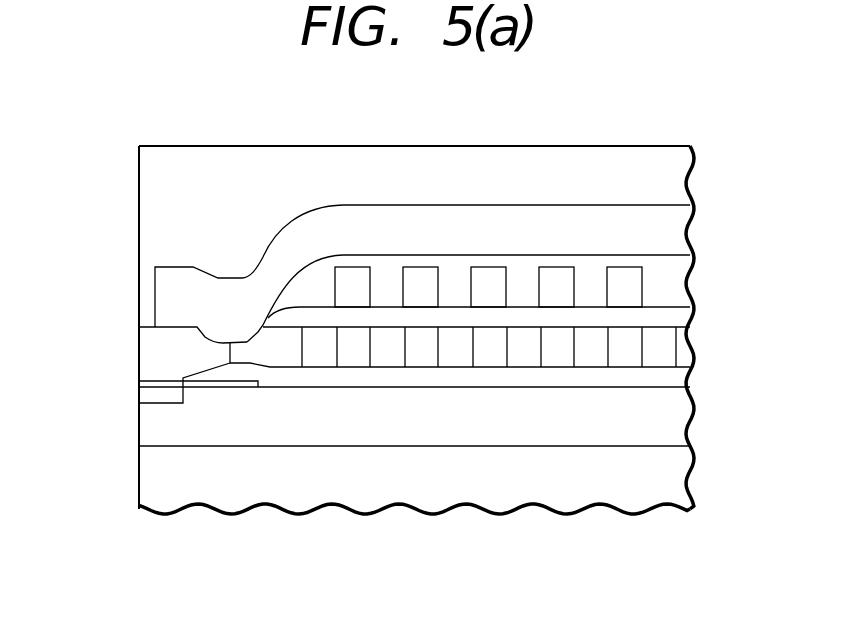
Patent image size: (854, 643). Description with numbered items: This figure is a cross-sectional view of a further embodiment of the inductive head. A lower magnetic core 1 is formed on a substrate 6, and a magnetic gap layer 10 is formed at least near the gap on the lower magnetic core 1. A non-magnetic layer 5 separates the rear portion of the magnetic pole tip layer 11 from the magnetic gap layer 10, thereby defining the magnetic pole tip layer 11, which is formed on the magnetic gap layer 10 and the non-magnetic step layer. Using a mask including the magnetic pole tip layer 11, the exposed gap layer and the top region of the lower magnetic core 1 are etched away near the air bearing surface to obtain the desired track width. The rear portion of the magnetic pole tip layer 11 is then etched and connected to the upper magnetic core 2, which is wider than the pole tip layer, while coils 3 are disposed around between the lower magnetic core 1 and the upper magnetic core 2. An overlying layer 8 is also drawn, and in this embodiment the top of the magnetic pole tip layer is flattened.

The upper insulating layer 8 is at (202, 158).
The upper magnetic core 2 is at (677, 233).
The coils 3 is at (704, 367).
The magnetic pole tip layer 11 is at (150, 353).
The magnetic gap layer 10 is at (141, 387).
The lower magnetic core 1 is at (150, 423).
The substrate 6 is at (150, 481).
The non-magnetic layer 5 is at (268, 377).